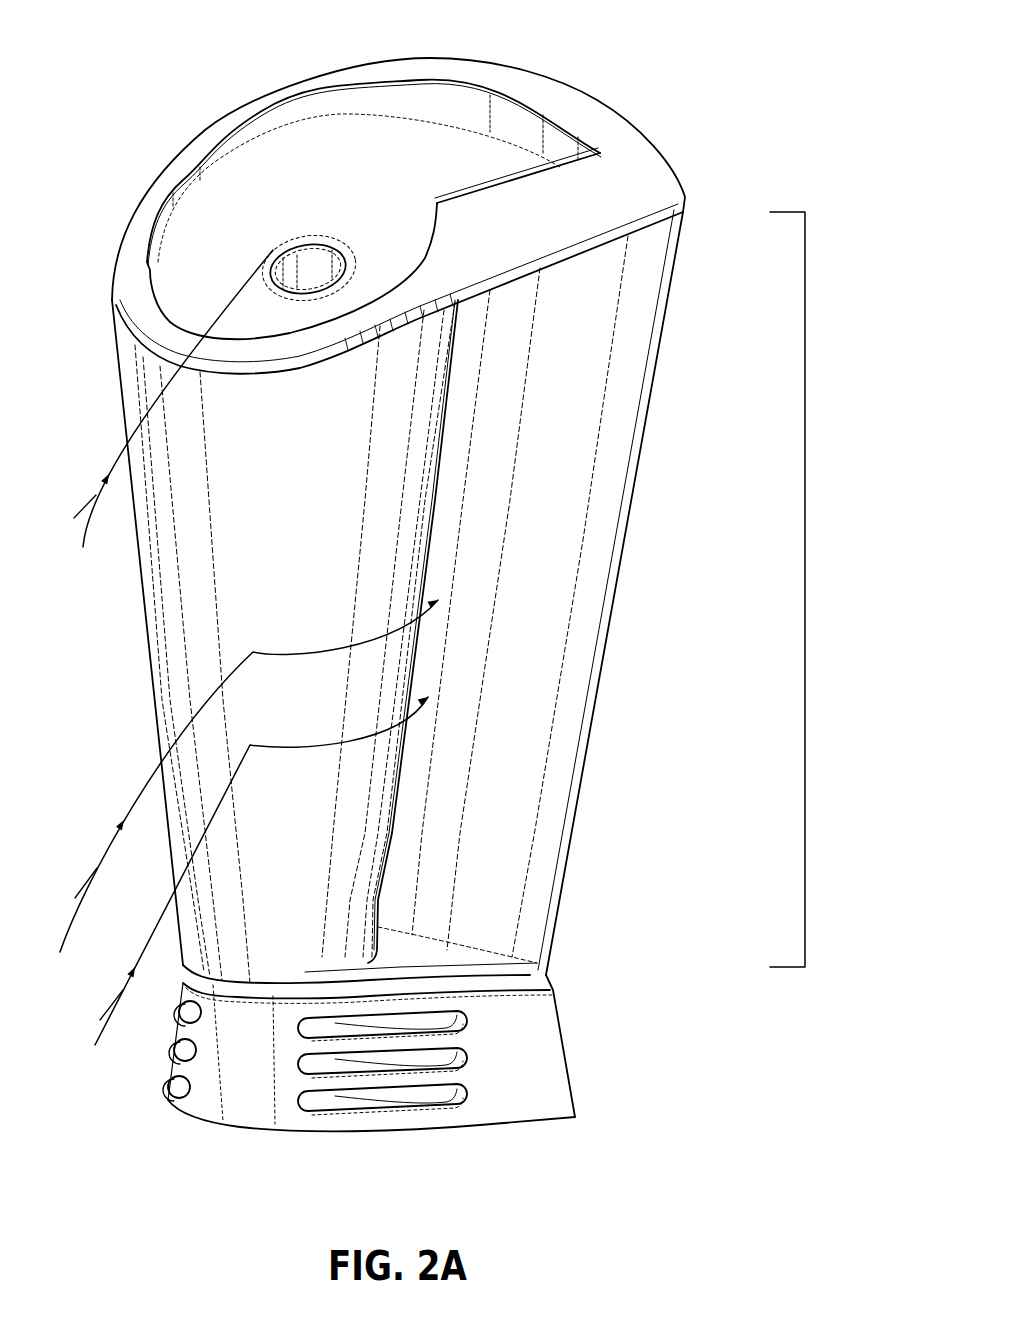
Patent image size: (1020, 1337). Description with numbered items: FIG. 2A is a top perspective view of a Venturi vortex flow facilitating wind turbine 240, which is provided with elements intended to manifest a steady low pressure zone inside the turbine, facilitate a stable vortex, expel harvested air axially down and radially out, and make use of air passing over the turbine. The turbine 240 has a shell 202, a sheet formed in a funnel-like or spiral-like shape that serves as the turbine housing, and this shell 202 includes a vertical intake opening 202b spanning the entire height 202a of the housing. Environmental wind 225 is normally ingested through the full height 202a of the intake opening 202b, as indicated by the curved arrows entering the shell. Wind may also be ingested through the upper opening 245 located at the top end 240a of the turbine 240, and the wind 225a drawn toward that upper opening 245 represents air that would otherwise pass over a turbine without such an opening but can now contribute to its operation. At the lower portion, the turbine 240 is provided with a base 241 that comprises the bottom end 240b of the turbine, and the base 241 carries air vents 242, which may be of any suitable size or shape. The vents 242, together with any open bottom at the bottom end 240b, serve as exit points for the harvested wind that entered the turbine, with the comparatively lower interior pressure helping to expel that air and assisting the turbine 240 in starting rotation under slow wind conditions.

The Venturi vortex flow facilitating wind turbine 240 is at (628, 87).
The top end 240a is at (257, 210).
The bottom end 240b is at (358, 1130).
The upper opening 245 is at (312, 264).
The shell 202 is at (651, 383).
The height of the turbine housing 202a is at (825, 589).
The intake opening 202b is at (463, 445).
The environmental wind 225 is at (243, 822).
The wind ingested through the upper opening 225a is at (169, 421).
The base 241 is at (245, 1123).
The vents 242 is at (482, 1037).